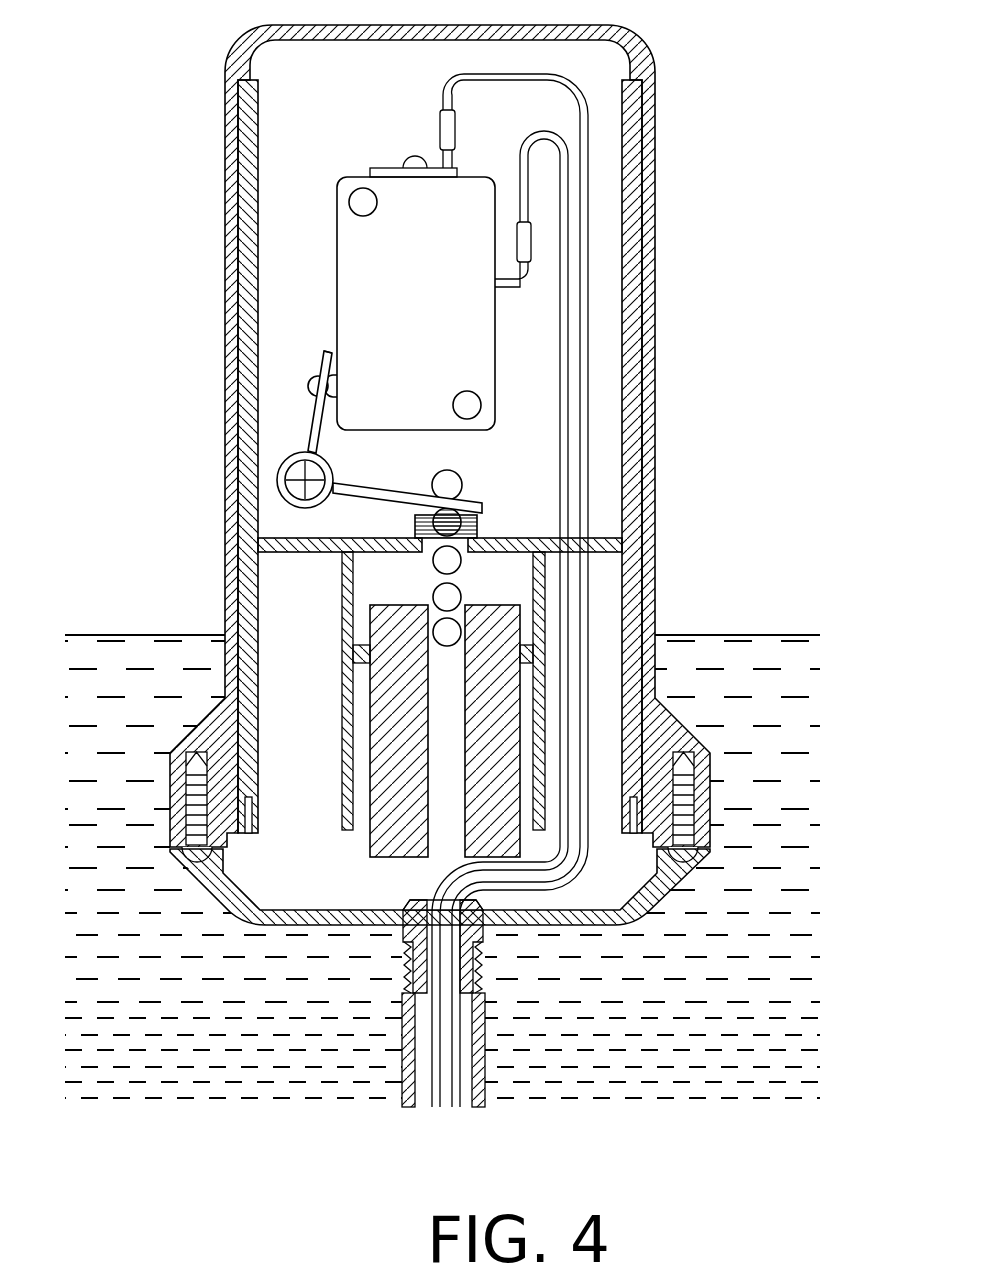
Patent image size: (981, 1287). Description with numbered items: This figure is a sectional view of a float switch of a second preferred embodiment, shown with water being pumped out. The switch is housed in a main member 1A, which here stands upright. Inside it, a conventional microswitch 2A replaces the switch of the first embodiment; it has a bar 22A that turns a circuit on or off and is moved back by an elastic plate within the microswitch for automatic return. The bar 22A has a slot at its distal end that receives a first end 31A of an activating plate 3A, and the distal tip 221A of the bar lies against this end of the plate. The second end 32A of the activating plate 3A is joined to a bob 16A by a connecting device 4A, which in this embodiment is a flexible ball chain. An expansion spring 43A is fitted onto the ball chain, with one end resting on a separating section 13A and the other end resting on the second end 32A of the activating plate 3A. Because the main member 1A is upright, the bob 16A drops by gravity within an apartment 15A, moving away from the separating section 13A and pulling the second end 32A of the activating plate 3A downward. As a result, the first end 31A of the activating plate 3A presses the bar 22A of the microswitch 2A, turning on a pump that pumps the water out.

The main member 1A is at (647, 107).
The microswitch 2A is at (345, 212).
The bar 22A is at (338, 383).
The pressing end of lever arm 221A is at (322, 365).
The activating plate 3A is at (293, 444).
The first end of activating plate 31A is at (313, 420).
The second end of activating plate 32A is at (353, 487).
The separating section 13A is at (512, 538).
The expansion spring 43A is at (420, 511).
The connecting device 4A is at (421, 573).
The apartment 15A is at (362, 828).
The bob 16A is at (417, 828).